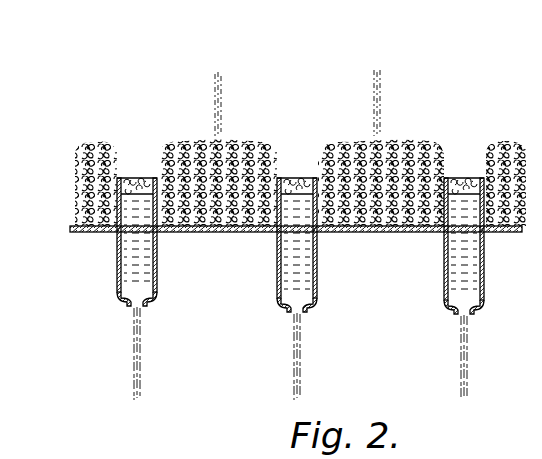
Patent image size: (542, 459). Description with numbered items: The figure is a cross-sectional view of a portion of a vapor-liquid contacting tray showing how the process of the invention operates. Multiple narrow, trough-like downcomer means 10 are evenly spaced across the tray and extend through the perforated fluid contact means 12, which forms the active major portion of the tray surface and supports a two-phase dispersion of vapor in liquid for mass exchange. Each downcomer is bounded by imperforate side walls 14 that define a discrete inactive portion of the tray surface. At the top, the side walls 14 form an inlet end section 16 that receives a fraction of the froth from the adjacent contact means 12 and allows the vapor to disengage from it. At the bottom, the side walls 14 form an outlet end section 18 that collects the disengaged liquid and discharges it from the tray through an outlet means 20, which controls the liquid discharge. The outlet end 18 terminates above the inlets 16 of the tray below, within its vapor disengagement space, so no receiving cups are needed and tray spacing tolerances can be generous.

The downcomer means 10 is at (117, 278).
The perforated fluid contact means 12 is at (82, 233).
The imperforate side walls 14 is at (157, 260).
The inlet end section 16 is at (135, 183).
The outlet end section 18 is at (118, 292).
The outlet means 20 is at (152, 304).